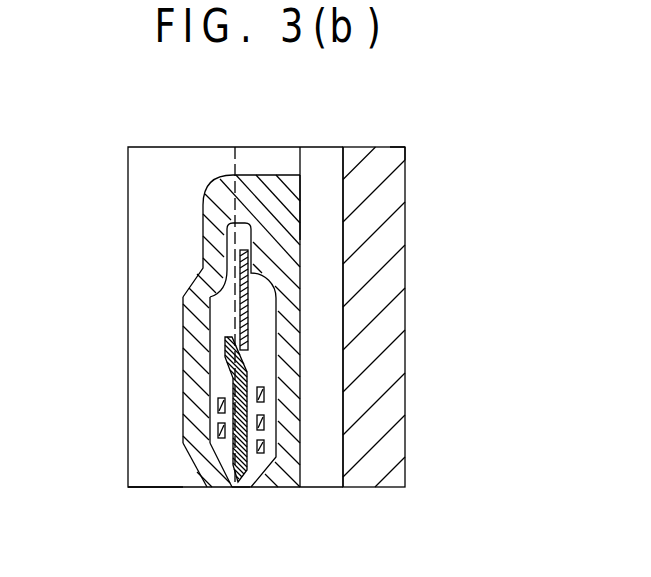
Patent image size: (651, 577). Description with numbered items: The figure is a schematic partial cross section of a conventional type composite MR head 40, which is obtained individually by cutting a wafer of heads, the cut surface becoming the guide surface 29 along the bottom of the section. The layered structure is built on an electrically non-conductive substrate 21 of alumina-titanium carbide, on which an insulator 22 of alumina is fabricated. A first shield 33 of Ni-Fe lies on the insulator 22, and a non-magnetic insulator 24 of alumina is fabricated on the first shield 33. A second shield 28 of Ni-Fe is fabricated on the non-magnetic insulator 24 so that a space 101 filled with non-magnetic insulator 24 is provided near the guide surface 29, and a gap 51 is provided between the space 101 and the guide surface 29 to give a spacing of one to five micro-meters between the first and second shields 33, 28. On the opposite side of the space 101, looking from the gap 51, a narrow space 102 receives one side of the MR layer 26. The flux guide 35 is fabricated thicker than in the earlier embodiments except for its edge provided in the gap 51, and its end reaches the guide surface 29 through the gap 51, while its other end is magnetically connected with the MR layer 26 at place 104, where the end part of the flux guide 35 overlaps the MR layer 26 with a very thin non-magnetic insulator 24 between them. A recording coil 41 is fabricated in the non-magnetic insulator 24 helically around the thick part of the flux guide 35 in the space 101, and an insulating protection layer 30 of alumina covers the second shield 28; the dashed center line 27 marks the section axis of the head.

The substrate 21 is at (387, 469).
The insulator 22 is at (323, 413).
The non-magnetic insulator 24 is at (215, 447).
The MR layer 26 is at (290, 286).
The center line 27 is at (235, 147).
The second shield 28 is at (183, 313).
The guide surface 29 is at (157, 492).
The protection layer 30 is at (148, 208).
The first shield 33 is at (290, 237).
The flux guide 35 is at (255, 367).
The composite MR head 40 is at (449, 149).
The coil 41 is at (218, 402).
The gap 51 is at (243, 492).
The space 101 is at (222, 352).
The narrow space 102 is at (252, 220).
The place of magnetic connection 104 is at (240, 352).